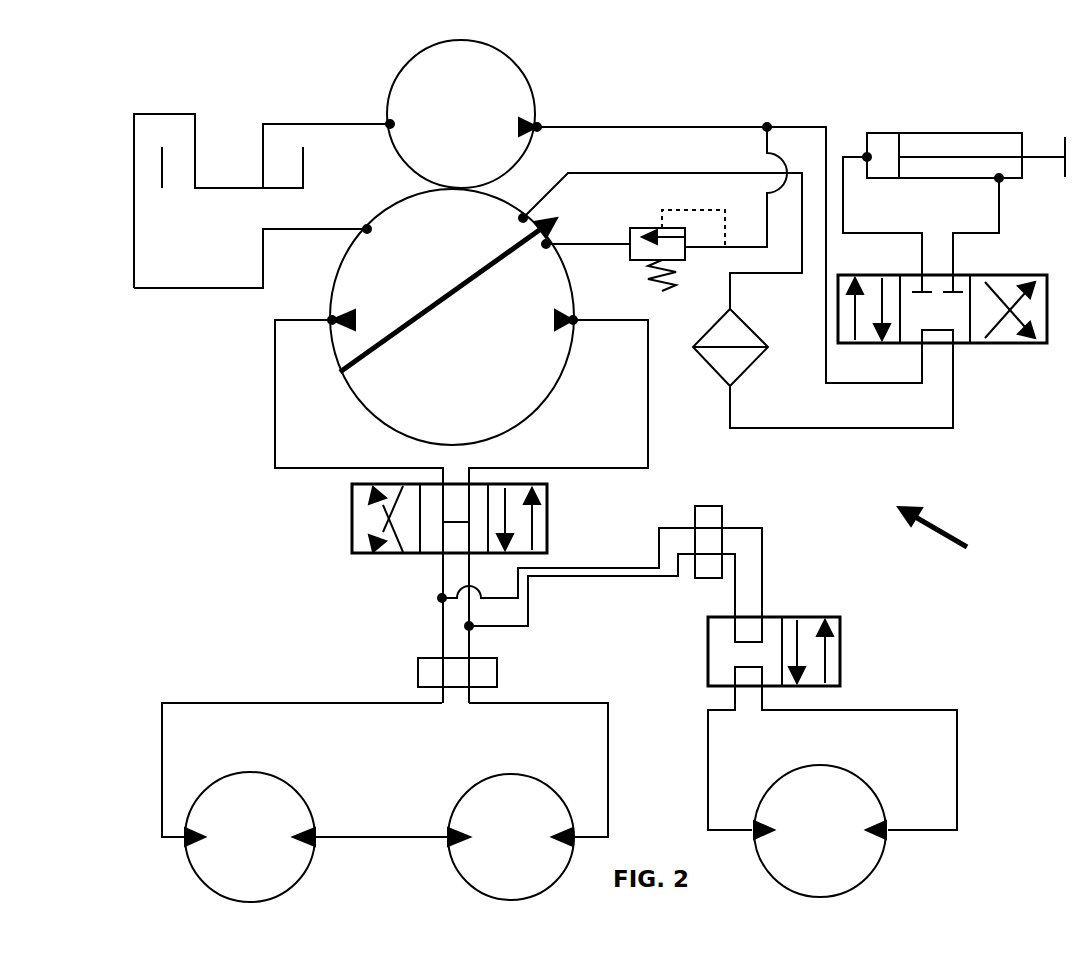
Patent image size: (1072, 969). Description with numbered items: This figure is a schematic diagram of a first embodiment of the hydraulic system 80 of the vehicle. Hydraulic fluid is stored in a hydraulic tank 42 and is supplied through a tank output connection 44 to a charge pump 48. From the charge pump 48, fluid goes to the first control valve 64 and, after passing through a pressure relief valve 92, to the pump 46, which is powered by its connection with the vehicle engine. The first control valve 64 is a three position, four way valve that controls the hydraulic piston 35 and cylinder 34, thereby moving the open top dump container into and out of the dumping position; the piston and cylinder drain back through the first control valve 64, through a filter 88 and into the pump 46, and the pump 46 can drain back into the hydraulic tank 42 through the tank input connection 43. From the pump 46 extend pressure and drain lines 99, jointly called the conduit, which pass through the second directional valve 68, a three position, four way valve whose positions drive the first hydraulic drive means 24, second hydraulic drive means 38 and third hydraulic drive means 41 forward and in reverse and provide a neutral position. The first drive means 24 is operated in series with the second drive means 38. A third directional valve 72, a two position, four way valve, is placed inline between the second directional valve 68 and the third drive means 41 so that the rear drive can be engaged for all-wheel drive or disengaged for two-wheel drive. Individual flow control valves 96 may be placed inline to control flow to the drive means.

The first hydraulic drive means 24 is at (220, 777).
The cylinder 34 is at (920, 133).
The hydraulic piston 35 is at (1040, 157).
The second hydraulic drive means 38 is at (553, 788).
The third hydraulic drive means 41 is at (762, 793).
The hydraulic tank 42 is at (227, 188).
The tank input connection 43 is at (163, 114).
The tank output connection 44 is at (293, 120).
The pump 46 is at (333, 297).
The charge pump 48 is at (413, 63).
The first control valve 64 is at (934, 275).
The second directional valve 68 is at (352, 527).
The third directional valve 72 is at (803, 617).
The hydraulic system 80 is at (945, 551).
The filter 88 is at (693, 347).
The pressure relief valve 92 is at (630, 228).
The flow control valves 96 is at (722, 518).
The pressure and drain lines 99 is at (275, 437).